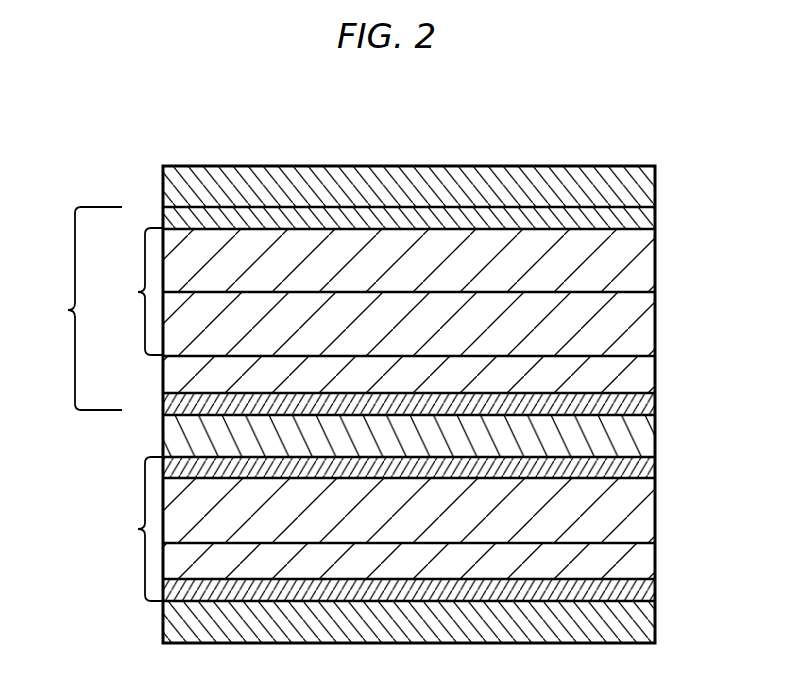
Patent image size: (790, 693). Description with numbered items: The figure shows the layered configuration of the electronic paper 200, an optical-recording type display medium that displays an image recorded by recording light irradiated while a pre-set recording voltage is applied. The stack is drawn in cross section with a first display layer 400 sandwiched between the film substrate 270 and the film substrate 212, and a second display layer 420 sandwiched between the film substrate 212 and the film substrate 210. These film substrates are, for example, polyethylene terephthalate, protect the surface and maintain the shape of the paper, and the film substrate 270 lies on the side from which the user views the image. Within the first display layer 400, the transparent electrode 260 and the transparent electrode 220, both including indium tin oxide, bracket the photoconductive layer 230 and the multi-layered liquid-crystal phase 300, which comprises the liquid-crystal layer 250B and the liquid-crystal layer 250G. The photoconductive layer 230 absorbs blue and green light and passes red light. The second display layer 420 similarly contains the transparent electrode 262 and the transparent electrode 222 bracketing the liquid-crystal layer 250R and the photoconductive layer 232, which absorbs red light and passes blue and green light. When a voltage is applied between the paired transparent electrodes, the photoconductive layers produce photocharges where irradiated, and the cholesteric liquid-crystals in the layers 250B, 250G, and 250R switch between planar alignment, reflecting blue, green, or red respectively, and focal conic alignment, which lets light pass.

The electronic paper 200 is at (557, 163).
The film substrate 270 is at (655, 187).
The transparent electrode 260 is at (655, 210).
The liquid-crystal layer 250B is at (643, 272).
The liquid-crystal layer 250G is at (647, 328).
The photoconductive layer 230 is at (648, 370).
The transparent electrode 220 is at (655, 397).
The film substrate 212 is at (647, 427).
The transparent electrode 262 is at (655, 463).
The liquid-crystal layer 250R is at (643, 510).
The photoconductive layer 232 is at (642, 562).
The transparent electrode 222 is at (653, 585).
The film substrate 210 is at (643, 627).
The first display layer 400 is at (336, 311).
The multi-layered liquid-crystal phase 300 is at (371, 292).
The second display layer 420 is at (370, 529).